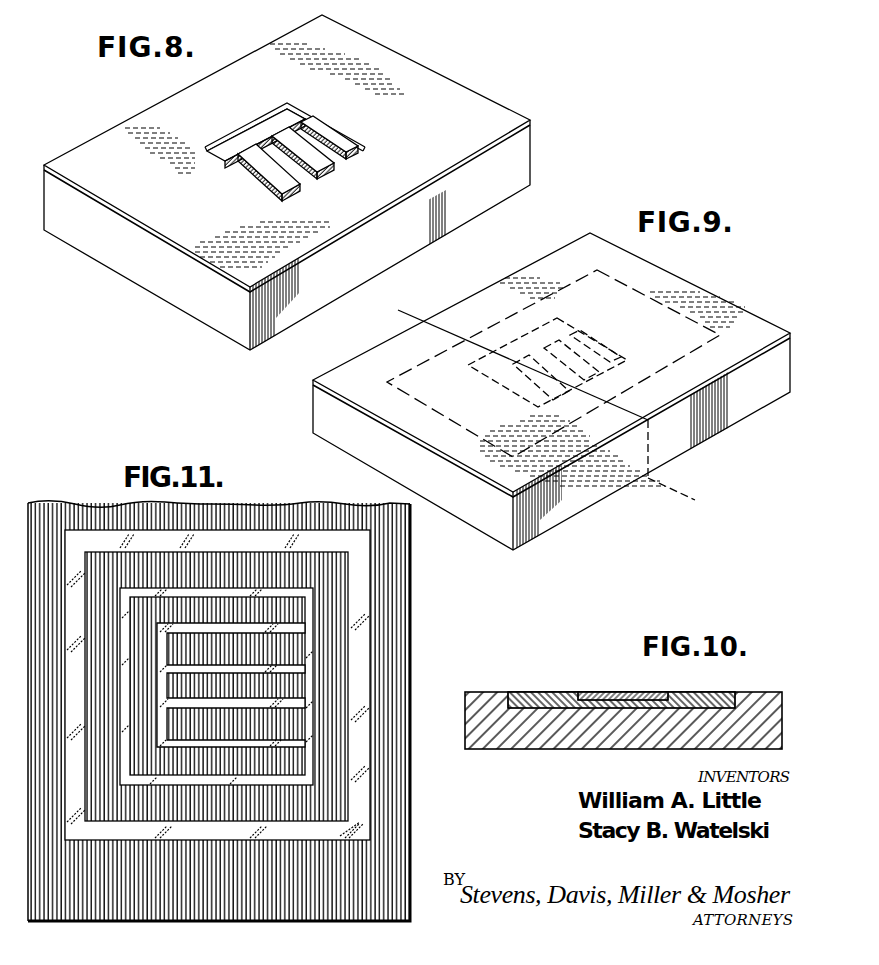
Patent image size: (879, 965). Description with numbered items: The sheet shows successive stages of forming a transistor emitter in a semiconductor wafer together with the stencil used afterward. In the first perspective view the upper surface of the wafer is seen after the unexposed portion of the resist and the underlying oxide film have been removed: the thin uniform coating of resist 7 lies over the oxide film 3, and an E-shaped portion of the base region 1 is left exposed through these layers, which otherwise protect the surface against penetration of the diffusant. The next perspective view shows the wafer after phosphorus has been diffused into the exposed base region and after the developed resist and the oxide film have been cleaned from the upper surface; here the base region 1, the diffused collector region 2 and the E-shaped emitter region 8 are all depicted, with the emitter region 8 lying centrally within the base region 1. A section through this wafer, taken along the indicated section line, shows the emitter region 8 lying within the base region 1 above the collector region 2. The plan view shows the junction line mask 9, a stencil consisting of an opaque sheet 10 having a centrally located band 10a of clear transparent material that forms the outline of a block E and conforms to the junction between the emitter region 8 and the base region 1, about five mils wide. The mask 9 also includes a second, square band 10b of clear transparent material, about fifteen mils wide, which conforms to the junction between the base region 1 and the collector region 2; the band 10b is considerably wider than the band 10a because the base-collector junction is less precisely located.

In FIG. 8, the base region 1 is at (326, 138).
In FIG. 9, the base region 1 is at (648, 310).
In FIG. 10, the base region 1 is at (537, 692).
In FIG. 9, the collector region 2 is at (720, 312).
In FIG. 10, the collector region 2 is at (537, 742).
In FIG. 8, the oxide film 3 is at (267, 118).
In FIG. 8, the coating of resist 7 is at (453, 103).
In FIG. 9, the emitter region 8 is at (575, 340).
In FIG. 10, the emitter region 8 is at (607, 692).
In FIG. 11, the mask 9 is at (418, 640).
In FIG. 9, the opaque sheet 10 is at (450, 284).
In FIG. 11, the opaque sheet 10 is at (396, 806).
In FIG. 11, the band of clear transparent material 10a is at (308, 607).
In FIG. 11, the second band of clear transparent material 10b is at (277, 543).